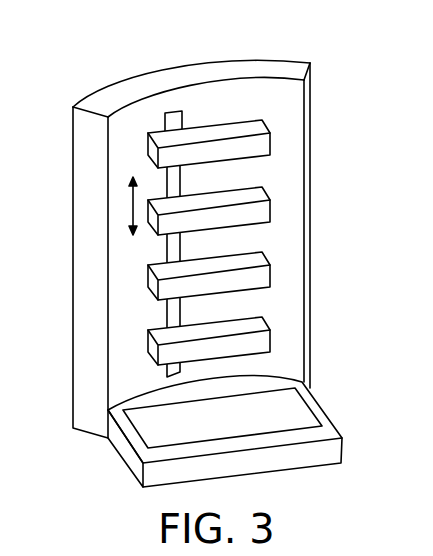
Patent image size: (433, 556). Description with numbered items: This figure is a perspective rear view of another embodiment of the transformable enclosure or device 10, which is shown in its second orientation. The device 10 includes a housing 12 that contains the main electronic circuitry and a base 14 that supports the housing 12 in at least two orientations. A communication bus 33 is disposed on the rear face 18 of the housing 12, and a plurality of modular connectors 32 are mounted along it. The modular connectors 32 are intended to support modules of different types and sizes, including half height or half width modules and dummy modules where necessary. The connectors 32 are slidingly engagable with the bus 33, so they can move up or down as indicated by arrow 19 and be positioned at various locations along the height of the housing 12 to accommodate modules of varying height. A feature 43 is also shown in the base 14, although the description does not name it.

The transformable enclosure 10 is at (217, 252).
The housing 12 is at (101, 87).
The base 14 is at (256, 431).
The rear face 18 is at (118, 297).
The arrow 19 is at (130, 213).
The modular connectors 32 is at (263, 143).
The communication bus 33 is at (173, 117).
The recess 43 is at (292, 413).